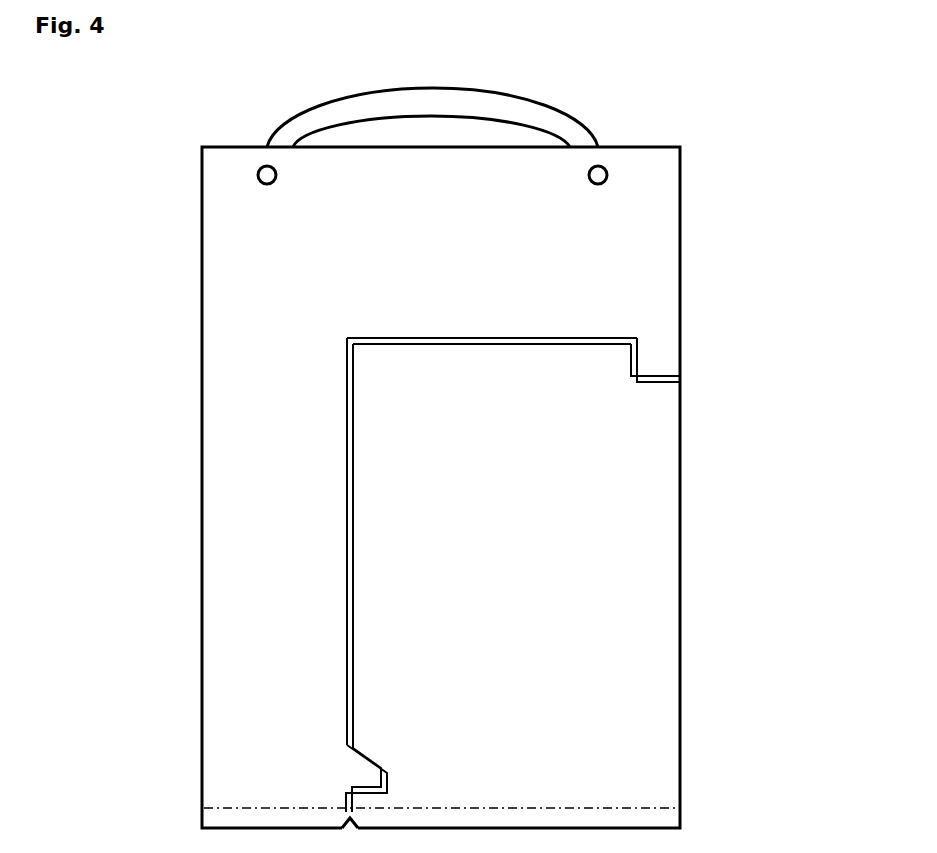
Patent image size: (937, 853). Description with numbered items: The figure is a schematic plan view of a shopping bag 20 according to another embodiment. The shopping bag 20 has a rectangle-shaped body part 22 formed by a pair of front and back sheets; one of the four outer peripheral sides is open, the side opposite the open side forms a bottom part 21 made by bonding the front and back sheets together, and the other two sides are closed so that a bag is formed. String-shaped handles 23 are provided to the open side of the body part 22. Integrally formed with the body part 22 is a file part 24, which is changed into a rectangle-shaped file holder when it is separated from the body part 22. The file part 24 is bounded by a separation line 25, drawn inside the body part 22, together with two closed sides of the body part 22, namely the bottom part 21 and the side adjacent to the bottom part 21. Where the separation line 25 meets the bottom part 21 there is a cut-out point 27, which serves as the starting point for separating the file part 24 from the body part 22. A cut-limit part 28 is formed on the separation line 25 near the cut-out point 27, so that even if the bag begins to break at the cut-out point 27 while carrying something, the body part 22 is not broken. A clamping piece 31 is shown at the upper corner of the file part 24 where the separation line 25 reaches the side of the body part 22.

The shopping bag 20 is at (165, 155).
The bottom part 21 is at (653, 818).
The body part 22 is at (228, 340).
The handle 23 is at (570, 130).
The file part 24 is at (439, 559).
The separation line 25 is at (345, 515).
The cut-out point 27 is at (343, 820).
The cut-limit part 28 is at (343, 793).
The clamping piece 31 is at (660, 360).